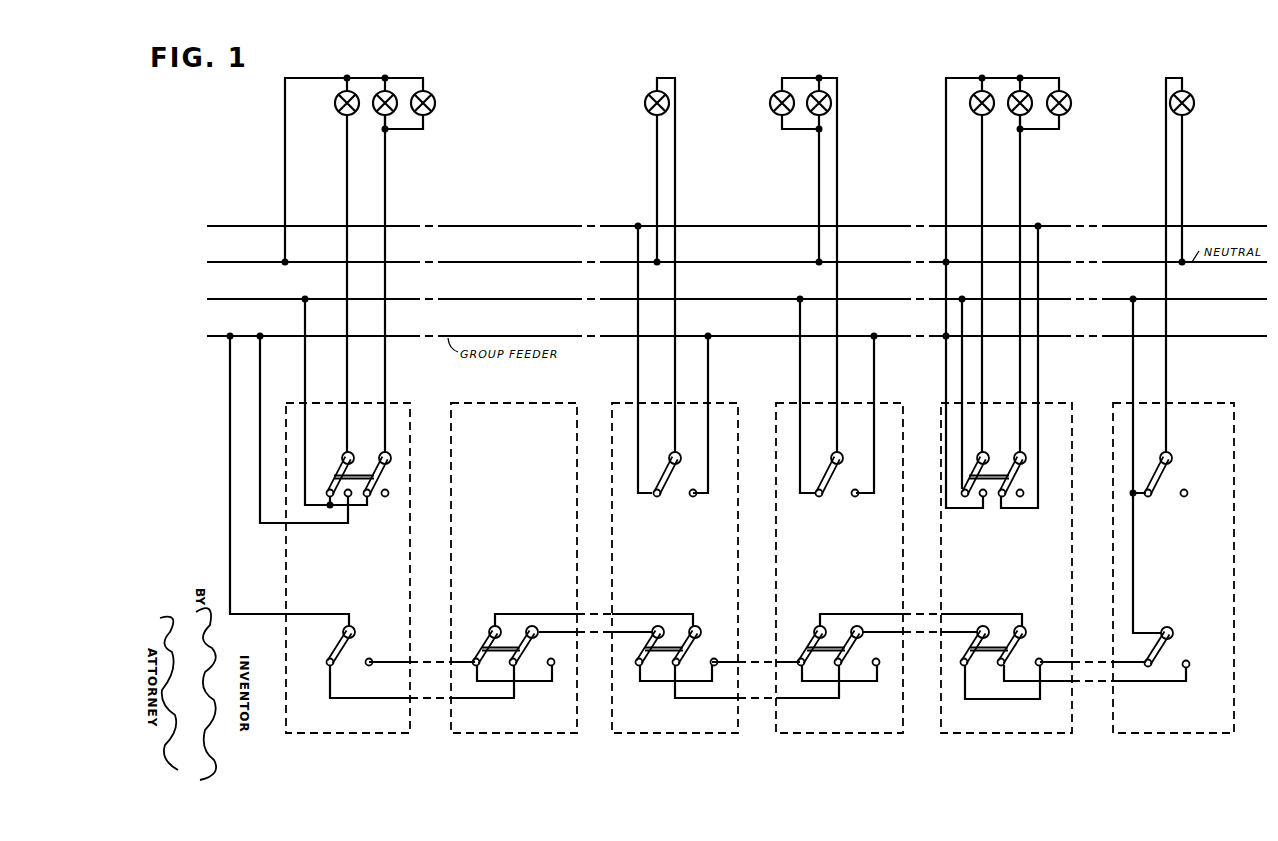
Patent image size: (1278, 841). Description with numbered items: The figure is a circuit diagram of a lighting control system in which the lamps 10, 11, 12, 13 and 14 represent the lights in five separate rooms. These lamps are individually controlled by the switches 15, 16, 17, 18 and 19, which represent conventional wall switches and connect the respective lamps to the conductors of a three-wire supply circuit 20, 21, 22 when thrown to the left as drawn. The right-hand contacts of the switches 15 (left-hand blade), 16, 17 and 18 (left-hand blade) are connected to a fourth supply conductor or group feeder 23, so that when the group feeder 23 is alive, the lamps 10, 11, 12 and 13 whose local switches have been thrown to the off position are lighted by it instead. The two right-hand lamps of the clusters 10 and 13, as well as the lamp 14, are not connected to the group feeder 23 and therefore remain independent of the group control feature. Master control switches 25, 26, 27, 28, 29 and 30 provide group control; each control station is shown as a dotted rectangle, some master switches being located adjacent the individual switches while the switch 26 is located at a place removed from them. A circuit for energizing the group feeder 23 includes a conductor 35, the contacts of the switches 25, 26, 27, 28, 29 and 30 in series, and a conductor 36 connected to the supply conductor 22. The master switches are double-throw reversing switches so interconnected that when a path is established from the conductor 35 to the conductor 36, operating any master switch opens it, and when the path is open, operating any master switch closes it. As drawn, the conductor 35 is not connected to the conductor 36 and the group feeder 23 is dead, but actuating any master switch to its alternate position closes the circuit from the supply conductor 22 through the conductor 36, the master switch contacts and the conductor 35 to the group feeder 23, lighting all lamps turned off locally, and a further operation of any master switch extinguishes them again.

The lamps 10 is at (414, 85).
The lamp 11 is at (645, 100).
The lamps 12 is at (814, 90).
The lamps 13 is at (1052, 90).
The lamp 14 is at (1195, 103).
The switch 15 is at (384, 455).
The switch 16 is at (668, 480).
The switch 17 is at (830, 480).
The switch 18 is at (1012, 469).
The switch 19 is at (1158, 479).
The supply circuit conductor 20 is at (484, 230).
The supply circuit conductor 21 is at (484, 266).
The supply circuit conductor 22 is at (484, 303).
The group feeder 23 is at (484, 340).
The master control switch 25 is at (356, 652).
The master control switch 26 is at (524, 648).
The master control switch 27 is at (687, 646).
The master control switch 28 is at (836, 655).
The master control switch 29 is at (1020, 646).
The master control switch 30 is at (1172, 648).
The conductor 35 is at (230, 478).
The conductor 36 is at (1135, 556).